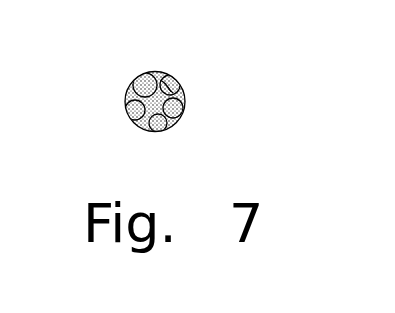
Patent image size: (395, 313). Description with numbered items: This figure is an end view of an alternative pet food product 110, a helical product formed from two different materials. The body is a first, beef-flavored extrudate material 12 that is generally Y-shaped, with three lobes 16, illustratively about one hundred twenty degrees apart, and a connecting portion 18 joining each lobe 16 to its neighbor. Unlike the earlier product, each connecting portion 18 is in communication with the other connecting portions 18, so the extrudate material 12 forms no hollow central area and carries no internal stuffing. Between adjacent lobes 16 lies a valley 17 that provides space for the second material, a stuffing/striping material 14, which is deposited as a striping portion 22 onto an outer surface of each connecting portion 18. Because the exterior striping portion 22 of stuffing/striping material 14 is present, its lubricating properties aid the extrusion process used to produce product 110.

The alternative pet food product 110 is at (240, 51).
The extrudate material 12 is at (128, 117).
The stuffing/striping material 14 is at (137, 101).
The lobes 16 is at (147, 82).
The valley 17 is at (162, 118).
The connecting portion 18 is at (144, 129).
The striping portion 22 is at (160, 93).